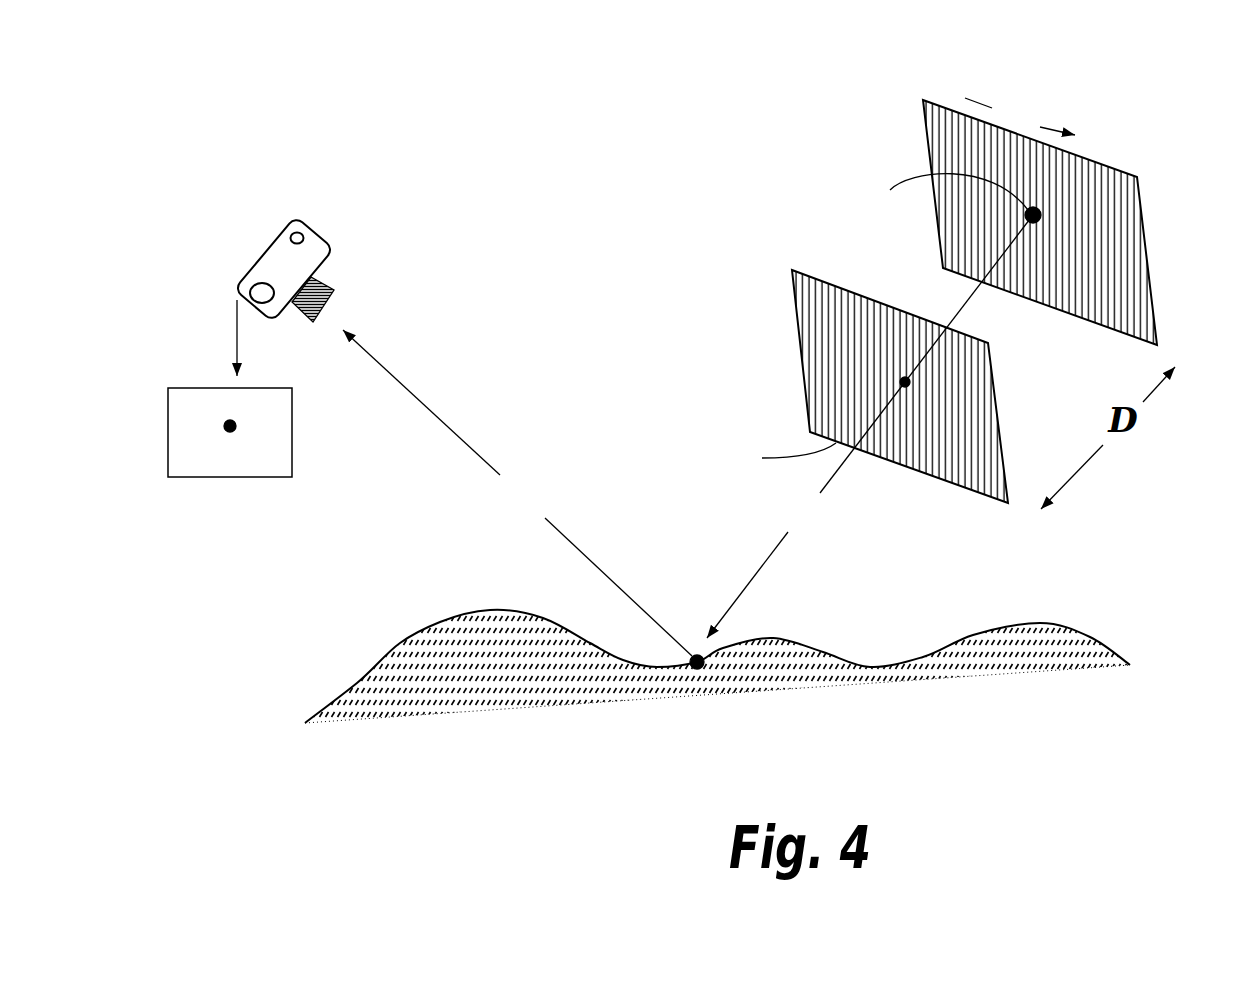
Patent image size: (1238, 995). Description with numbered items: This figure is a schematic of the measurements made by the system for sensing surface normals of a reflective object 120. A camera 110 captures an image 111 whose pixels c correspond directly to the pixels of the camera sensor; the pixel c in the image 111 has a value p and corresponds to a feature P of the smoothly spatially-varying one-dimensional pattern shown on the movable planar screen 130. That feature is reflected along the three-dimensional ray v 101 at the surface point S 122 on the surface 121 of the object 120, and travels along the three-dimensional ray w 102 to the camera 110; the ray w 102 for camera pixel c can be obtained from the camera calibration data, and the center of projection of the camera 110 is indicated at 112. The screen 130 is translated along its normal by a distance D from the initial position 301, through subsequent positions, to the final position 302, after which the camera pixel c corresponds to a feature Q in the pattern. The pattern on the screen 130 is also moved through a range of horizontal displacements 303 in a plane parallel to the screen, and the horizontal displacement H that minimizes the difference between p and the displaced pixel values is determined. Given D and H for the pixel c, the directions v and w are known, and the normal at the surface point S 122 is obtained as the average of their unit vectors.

The 3D ray v 101 is at (830, 483).
The 3D ray w 102 is at (420, 400).
The camera 110 is at (292, 218).
The image 111 is at (250, 478).
The camera center point c 112 is at (230, 424).
The object 120 is at (847, 680).
The object surface profile 121 is at (993, 632).
The surface point S 122 is at (685, 687).
The movable planar screen 130 is at (828, 377).
The initial position 301 is at (1007, 463).
The final position 302 is at (1145, 237).
The horizontal displacements 303 is at (1029, 186).